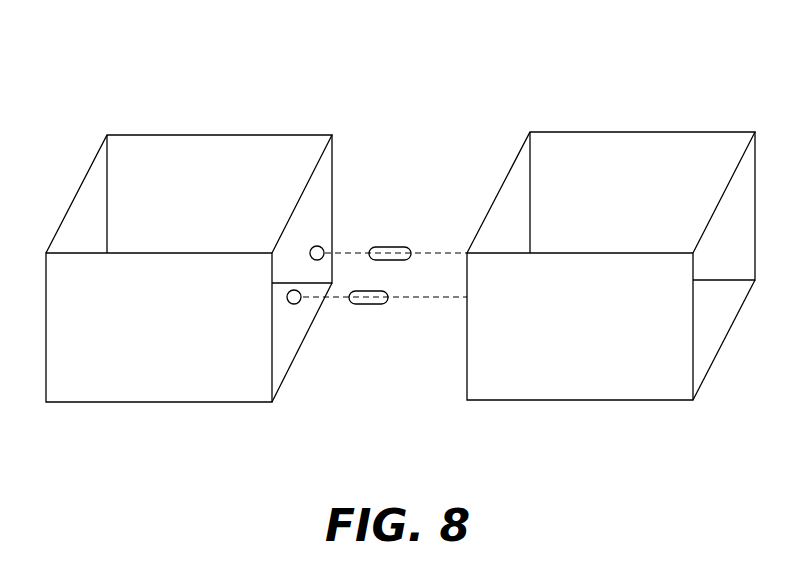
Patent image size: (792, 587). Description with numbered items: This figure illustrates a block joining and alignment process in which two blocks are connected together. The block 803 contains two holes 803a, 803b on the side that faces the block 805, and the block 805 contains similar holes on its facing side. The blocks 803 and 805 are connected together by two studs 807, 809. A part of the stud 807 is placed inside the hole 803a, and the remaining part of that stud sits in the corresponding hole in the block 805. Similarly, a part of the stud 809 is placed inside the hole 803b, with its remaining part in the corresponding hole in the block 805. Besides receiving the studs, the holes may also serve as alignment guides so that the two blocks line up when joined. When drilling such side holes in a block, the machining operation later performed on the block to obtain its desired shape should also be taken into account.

The block 803 is at (210, 133).
The block 805 is at (642, 132).
The hole 803a is at (323, 248).
The hole 803b is at (297, 305).
The stud 807 is at (382, 305).
The stud 809 is at (408, 248).